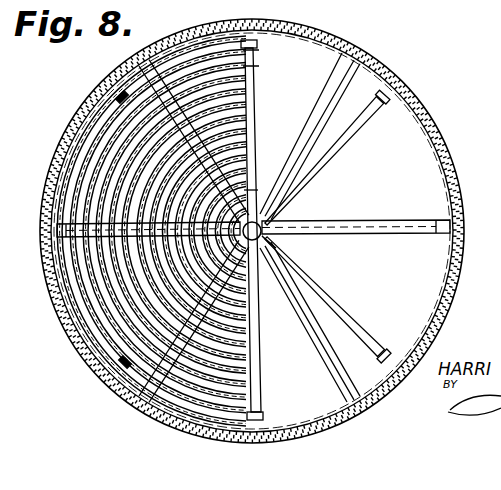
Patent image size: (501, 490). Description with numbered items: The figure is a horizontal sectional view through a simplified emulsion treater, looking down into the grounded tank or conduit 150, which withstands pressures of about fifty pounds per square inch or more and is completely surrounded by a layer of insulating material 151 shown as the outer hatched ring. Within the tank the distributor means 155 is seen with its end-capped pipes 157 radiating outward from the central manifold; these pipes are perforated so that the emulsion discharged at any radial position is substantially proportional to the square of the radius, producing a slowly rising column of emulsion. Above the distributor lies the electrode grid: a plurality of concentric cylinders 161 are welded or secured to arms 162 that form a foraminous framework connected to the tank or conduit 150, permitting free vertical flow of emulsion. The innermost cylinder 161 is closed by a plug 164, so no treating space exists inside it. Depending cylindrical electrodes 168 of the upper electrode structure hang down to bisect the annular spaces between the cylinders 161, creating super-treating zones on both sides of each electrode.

The tank or conduit 150 is at (423, 105).
The layer of insulating material 151 is at (448, 138).
The distributor means 155 is at (268, 243).
The end-capped pipes 157 is at (340, 142).
The concentric cylinders 161 is at (246, 70).
The arms 162 is at (300, 320).
The plug 164 is at (268, 238).
The depending cylindrical electrodes 168 is at (257, 52).